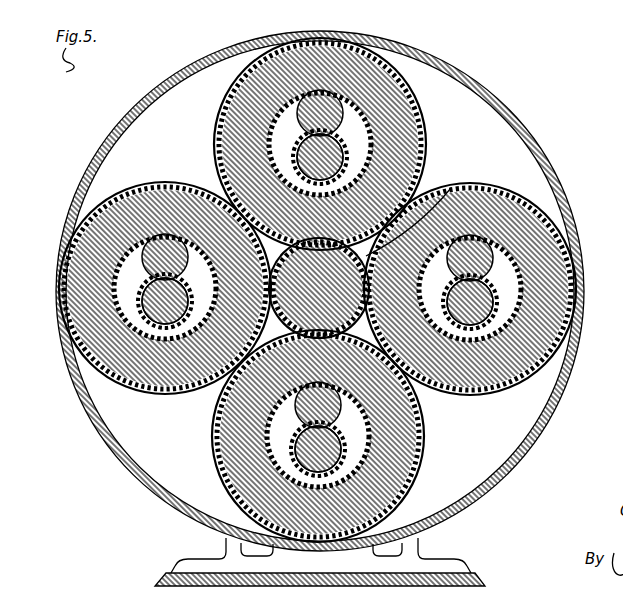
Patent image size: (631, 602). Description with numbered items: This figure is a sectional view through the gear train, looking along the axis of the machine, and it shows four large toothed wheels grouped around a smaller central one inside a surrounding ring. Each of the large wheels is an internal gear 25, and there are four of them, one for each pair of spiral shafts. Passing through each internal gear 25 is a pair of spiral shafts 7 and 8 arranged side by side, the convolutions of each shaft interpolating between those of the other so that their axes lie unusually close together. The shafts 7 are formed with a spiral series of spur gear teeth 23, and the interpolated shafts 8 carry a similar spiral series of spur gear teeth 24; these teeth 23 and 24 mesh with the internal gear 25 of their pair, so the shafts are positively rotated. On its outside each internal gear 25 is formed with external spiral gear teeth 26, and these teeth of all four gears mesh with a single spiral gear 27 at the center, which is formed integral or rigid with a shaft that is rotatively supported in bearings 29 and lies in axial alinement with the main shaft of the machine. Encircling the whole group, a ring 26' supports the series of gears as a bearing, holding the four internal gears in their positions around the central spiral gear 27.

The spiral shaft 7 is at (300, 147).
The spiral shaft 8 is at (334, 105).
The spur gear teeth 23 is at (283, 153).
The spur gear teeth 24 is at (280, 115).
The internal gear 25 is at (365, 132).
The external spiral gear teeth 26 is at (304, 290).
The ring 26' is at (334, 291).
The spiral gear 27 is at (443, 180).
The bearing 29 is at (410, 533).